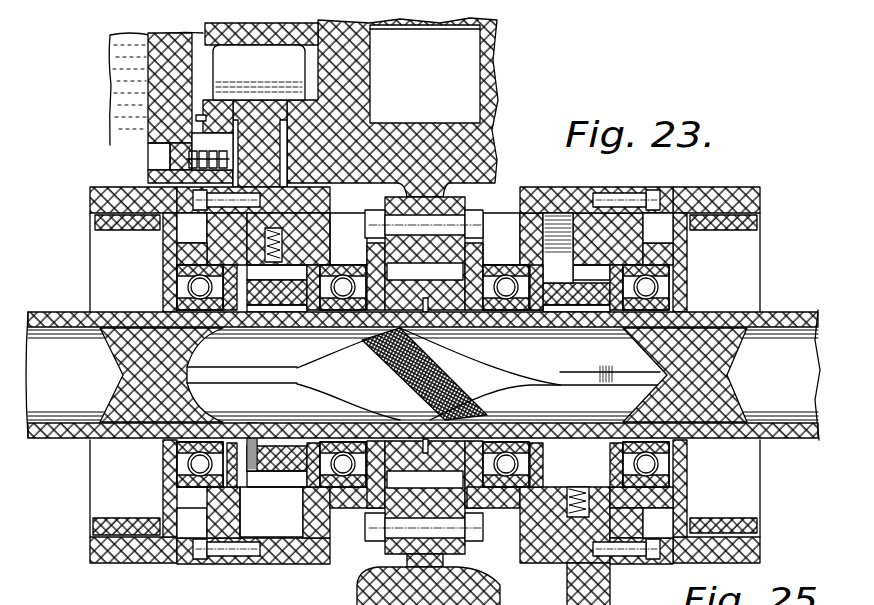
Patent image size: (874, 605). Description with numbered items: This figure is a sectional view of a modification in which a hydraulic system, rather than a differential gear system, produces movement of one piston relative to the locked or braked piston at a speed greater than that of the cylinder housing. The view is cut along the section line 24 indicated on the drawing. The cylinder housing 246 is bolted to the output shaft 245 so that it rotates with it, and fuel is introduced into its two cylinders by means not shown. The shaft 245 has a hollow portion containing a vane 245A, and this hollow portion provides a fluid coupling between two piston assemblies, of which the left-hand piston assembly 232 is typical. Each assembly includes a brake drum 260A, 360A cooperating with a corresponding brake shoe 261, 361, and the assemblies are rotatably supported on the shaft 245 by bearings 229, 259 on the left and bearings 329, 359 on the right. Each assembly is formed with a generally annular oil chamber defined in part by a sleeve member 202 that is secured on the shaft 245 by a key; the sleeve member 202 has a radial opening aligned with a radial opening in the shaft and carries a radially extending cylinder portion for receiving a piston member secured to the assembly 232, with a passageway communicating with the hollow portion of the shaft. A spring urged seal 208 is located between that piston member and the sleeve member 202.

The section line 24— 24 is at (300, 14).
The piston assembly 232 is at (150, 175).
The cylinder housing 246 is at (496, 106).
The brake drum 260A is at (103, 203).
The brake shoe 261 is at (103, 233).
The bearing 259 is at (185, 273).
The spring urged seal 208 is at (325, 236).
The sleeve member 202 is at (277, 303).
The bearing 229 is at (343, 292).
The vane 245A is at (497, 368).
The bearing 329 is at (540, 262).
The brake drum 360A is at (760, 192).
The brake shoe 361 is at (731, 230).
The bearing 359 is at (675, 281).
The output shaft 245 is at (762, 320).